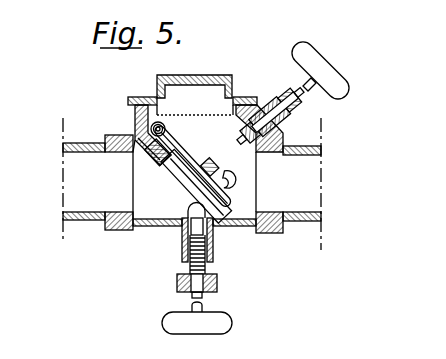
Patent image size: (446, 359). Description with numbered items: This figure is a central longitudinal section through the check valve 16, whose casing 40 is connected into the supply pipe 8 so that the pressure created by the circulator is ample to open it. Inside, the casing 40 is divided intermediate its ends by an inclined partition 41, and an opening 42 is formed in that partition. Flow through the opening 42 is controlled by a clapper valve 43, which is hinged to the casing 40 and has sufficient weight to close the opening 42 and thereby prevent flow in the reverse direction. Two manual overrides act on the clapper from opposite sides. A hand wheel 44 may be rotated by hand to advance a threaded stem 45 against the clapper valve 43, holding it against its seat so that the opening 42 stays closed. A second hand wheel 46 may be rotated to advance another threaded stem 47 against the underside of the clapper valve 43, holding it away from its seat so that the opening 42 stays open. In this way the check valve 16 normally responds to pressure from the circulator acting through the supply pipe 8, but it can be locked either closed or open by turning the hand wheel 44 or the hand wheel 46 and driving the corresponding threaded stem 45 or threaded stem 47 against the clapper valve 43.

The supply pipe 8 is at (72, 212).
The check valve 16 is at (105, 73).
The casing 40 is at (269, 234).
The inclined partition 41 is at (145, 152).
The opening 42 is at (180, 177).
The clapper valve 43 is at (190, 152).
The hand wheel 44 is at (333, 83).
The threaded stem 45 is at (244, 142).
The hand wheel 46 is at (232, 323).
The threaded stem 47 is at (181, 232).